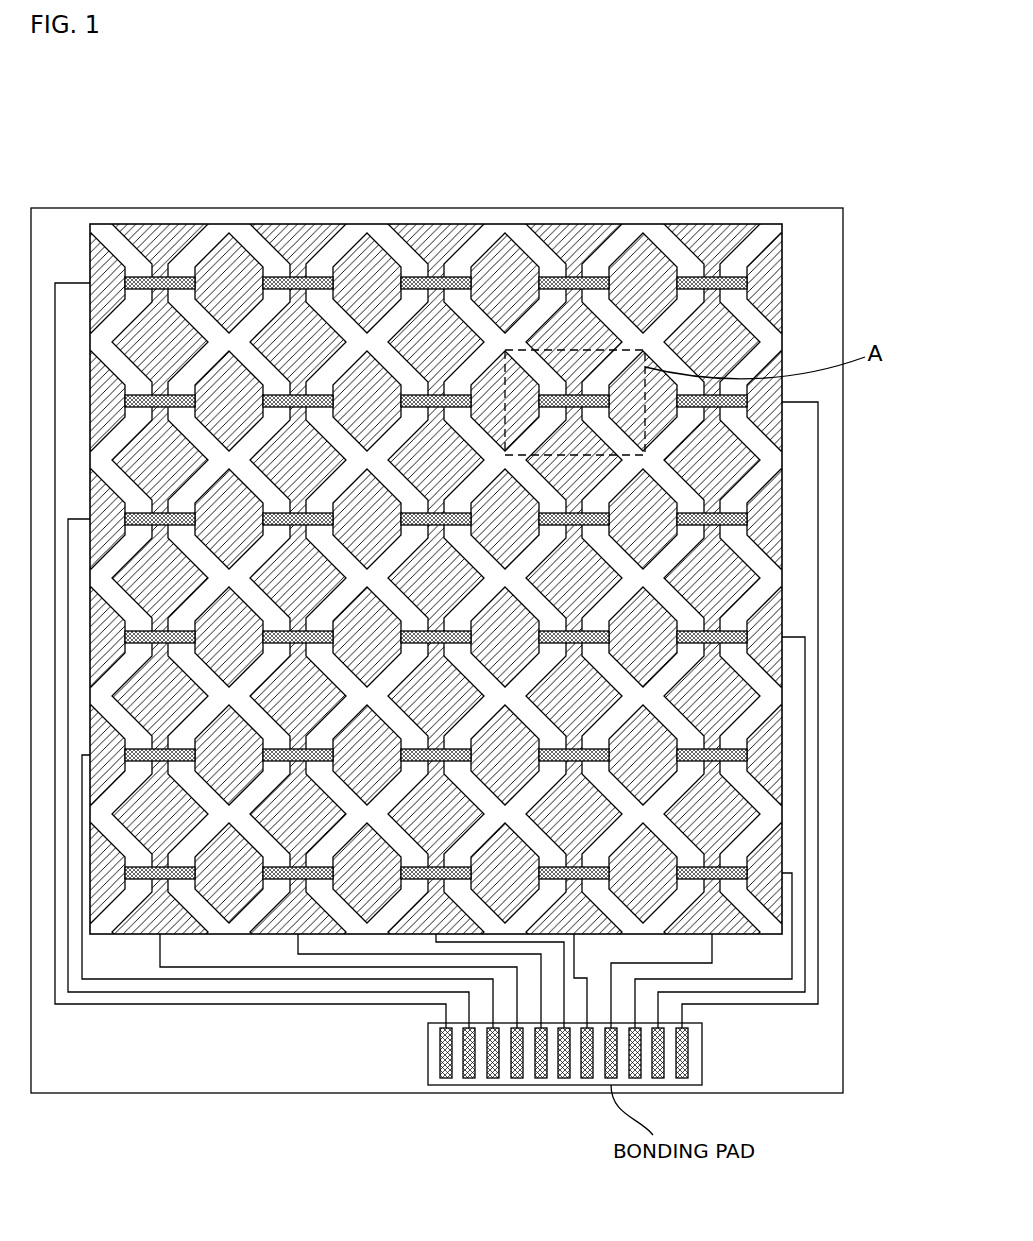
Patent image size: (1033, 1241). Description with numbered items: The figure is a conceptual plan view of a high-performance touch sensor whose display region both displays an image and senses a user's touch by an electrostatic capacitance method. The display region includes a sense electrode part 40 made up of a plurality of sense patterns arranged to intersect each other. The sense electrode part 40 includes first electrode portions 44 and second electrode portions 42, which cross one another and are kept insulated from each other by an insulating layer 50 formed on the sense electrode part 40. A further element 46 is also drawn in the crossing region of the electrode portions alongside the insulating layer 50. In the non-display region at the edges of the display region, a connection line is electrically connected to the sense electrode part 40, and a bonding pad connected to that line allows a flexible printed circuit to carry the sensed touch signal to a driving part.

The sense electrode part 40 is at (640, 150).
The second electrode portions 42 is at (520, 385).
The first electrode portions 44 is at (553, 353).
The bridge electrode 46 is at (577, 395).
The insulating layer 50 is at (627, 355).